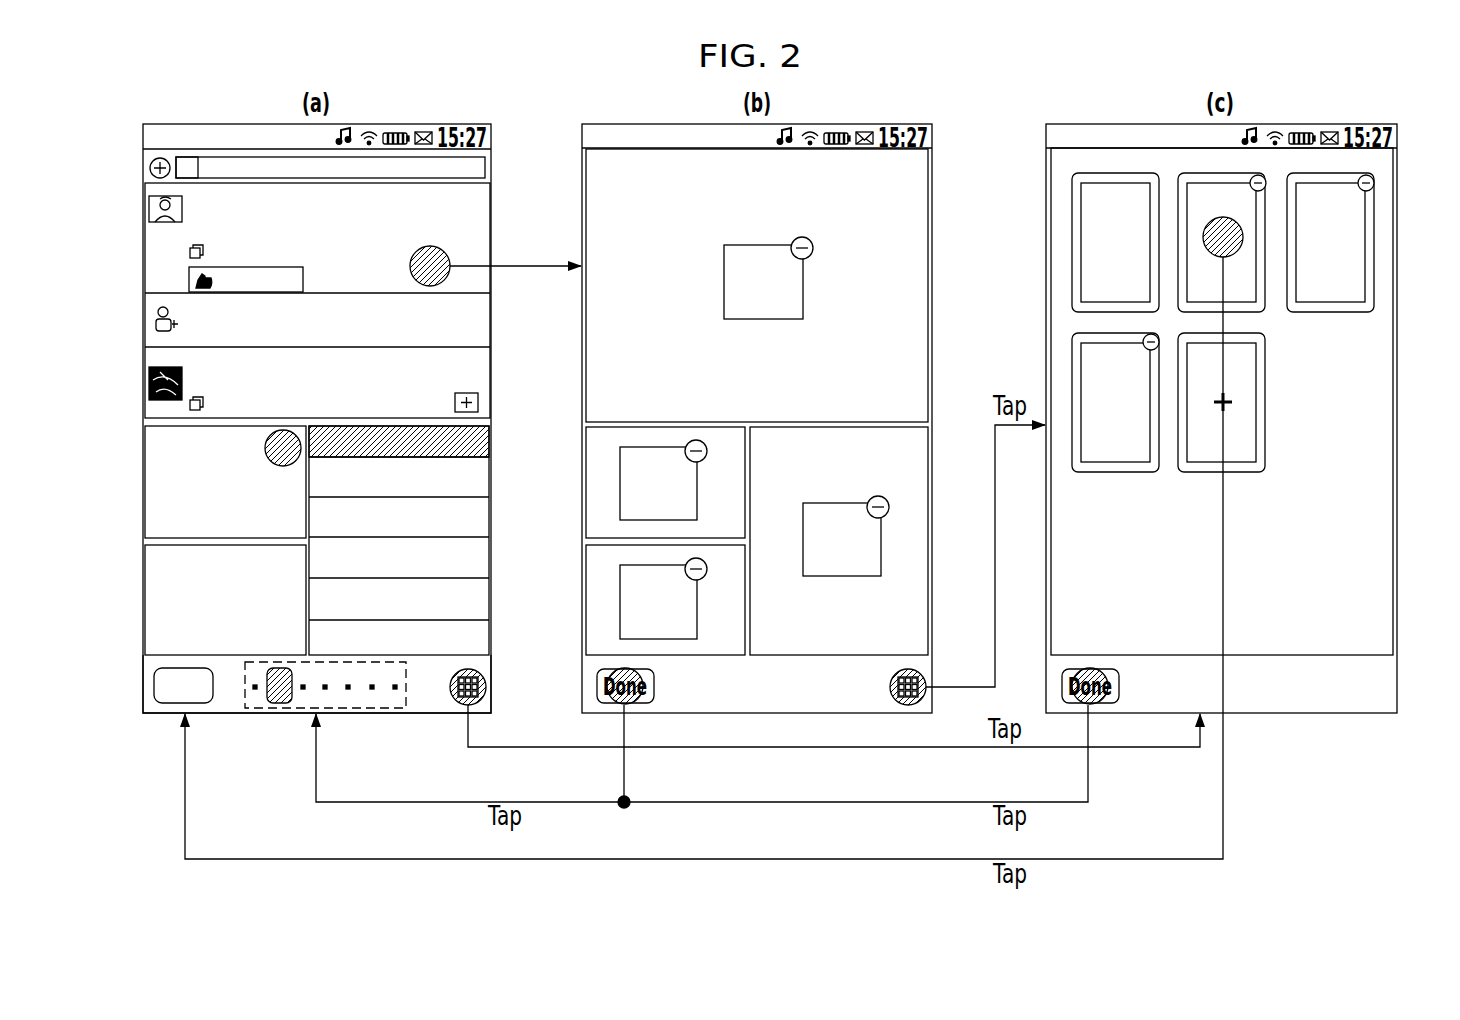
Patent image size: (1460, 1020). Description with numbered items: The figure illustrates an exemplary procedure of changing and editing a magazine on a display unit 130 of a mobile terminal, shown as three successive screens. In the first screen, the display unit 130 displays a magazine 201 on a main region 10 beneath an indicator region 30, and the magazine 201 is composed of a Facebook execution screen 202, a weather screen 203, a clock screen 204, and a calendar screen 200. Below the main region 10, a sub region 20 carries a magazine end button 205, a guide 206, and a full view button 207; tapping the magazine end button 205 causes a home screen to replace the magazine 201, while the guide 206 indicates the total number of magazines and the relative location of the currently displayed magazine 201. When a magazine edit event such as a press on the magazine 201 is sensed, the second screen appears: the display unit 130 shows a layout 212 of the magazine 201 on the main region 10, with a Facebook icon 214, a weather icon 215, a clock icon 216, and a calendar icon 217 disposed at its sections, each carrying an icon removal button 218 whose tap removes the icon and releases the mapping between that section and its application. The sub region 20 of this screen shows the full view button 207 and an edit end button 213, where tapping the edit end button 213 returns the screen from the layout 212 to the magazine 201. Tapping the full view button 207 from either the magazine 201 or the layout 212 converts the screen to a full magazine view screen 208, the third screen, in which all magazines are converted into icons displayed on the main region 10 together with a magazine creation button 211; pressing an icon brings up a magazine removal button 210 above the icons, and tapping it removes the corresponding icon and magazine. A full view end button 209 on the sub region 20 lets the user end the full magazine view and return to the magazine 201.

The display unit 130 is at (442, 121).
The indicator region 30 is at (160, 138).
The main region 10 is at (136, 655).
The magazine 201 is at (138, 391).
The Facebook execution screen 202 is at (467, 190).
The weather screen 203 is at (162, 459).
The clock screen 204 is at (162, 639).
The calendar screen 200 is at (468, 513).
The sub region 20 is at (136, 657).
The magazine end button 205 is at (216, 700).
The guide 206 is at (408, 692).
The full view button 207 is at (487, 677).
The layout 212 is at (573, 381).
The Facebook icon 214 is at (736, 245).
The icon removal button 218 is at (812, 238).
The weather icon 215 is at (620, 485).
The clock icon 216 is at (698, 603).
The calendar icon 217 is at (867, 560).
The edit end button 213 is at (655, 683).
The full magazine view screen 208 is at (1041, 323).
The magazine removal button 210 is at (1375, 183).
The magazine creation button 211 is at (1245, 376).
The full view end button 209 is at (1096, 704).